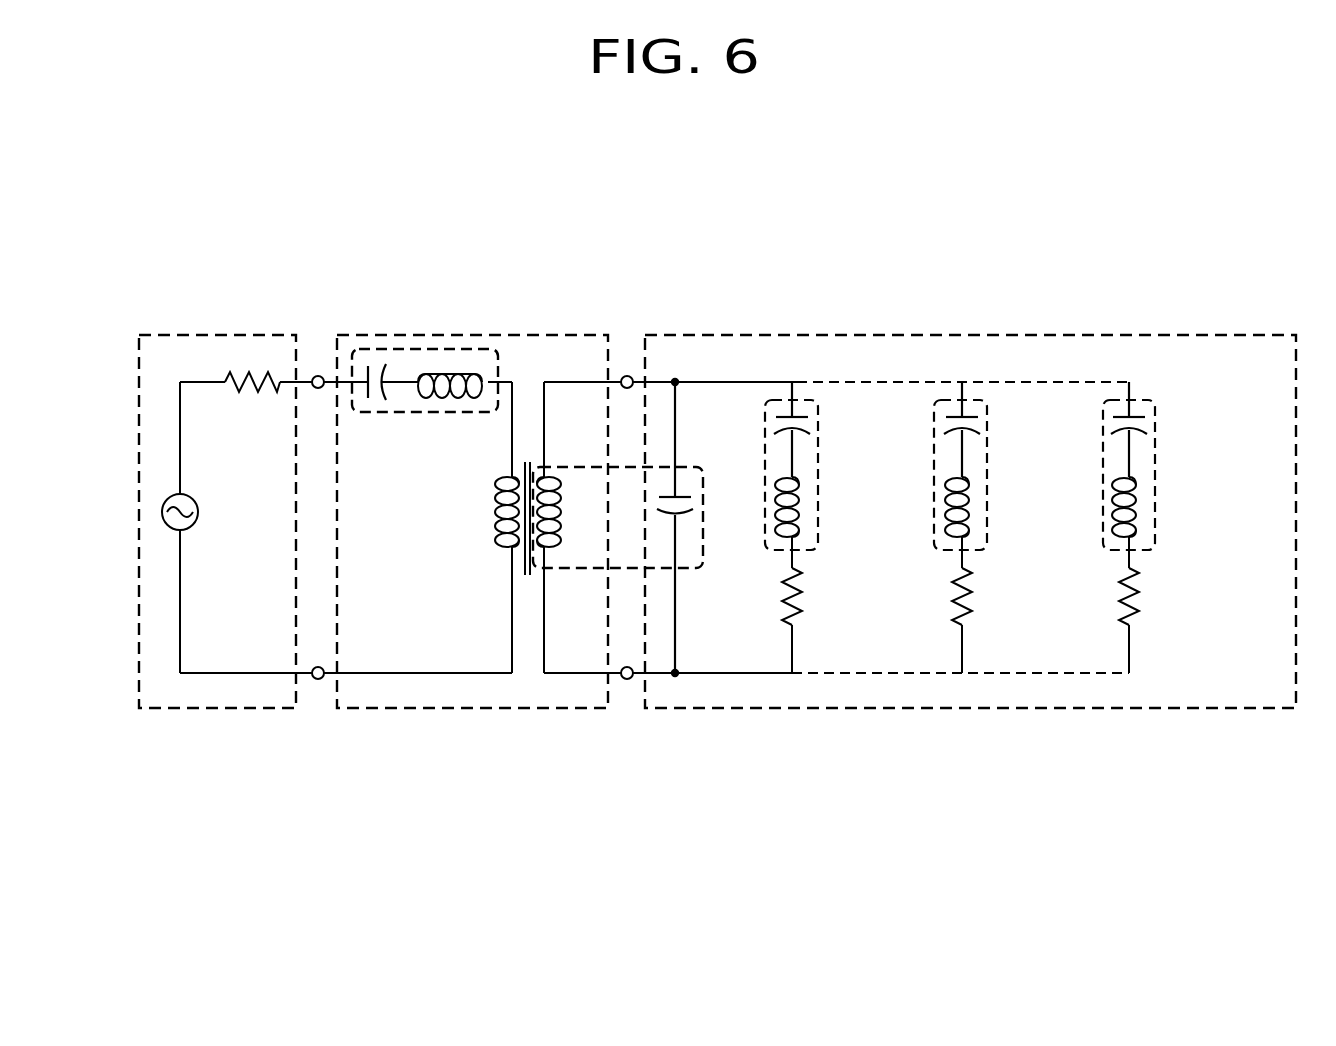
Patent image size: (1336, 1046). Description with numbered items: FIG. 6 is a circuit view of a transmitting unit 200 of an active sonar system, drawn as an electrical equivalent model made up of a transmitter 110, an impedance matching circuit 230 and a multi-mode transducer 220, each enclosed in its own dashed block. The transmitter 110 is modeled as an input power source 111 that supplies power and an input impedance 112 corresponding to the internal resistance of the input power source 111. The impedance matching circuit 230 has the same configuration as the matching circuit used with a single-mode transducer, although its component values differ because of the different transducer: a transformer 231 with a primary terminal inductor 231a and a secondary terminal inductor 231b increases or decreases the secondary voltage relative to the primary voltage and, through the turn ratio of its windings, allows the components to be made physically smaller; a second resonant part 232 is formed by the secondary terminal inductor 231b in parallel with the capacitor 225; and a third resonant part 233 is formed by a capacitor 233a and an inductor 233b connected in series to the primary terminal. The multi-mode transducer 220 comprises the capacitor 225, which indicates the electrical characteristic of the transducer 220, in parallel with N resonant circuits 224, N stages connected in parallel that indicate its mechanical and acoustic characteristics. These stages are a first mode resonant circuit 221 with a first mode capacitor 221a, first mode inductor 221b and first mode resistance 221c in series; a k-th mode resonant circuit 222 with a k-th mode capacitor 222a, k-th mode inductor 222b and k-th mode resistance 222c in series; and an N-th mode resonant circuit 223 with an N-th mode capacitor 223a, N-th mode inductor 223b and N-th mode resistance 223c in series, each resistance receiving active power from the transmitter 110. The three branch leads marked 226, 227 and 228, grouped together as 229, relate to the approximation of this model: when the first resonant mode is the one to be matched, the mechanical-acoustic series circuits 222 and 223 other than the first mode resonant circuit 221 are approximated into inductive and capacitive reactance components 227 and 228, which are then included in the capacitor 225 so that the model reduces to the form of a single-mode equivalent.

The transmitter 110 is at (201, 335).
The input power source 111 is at (209, 514).
The input impedance 112 is at (253, 407).
The transmitting unit 200 is at (616, 272).
The multi-mode transducer 220 is at (694, 335).
The first mode resonant circuit 221 is at (877, 385).
The first mode capacitor 221a is at (827, 429).
The first mode inductor 221b is at (827, 522).
The first mode resistance 221c is at (831, 620).
The k-th mode resonant circuit 222 is at (1044, 385).
The k-th mode capacitor 222a is at (996, 429).
The k-th mode inductor 222b is at (997, 522).
The k-th mode resistance 222c is at (1000, 620).
The N-th mode resonant circuit 223 is at (1215, 385).
The N-th mode capacitor 223a is at (1164, 429).
The N-th mode inductor 223b is at (1164, 522).
The N-th mode resistance 223c is at (1168, 620).
The N resonant circuits 224 is at (1148, 678).
The capacitor 225 is at (707, 527).
The first series resonance circuit 226 is at (808, 400).
The approximated inductive and capacitive reactance component 227 is at (975, 400).
The approximated inductive and capacitive reactance component 228 is at (1115, 400).
The series resonance circuits 229 is at (1097, 260).
The impedance matching circuit 230 is at (512, 335).
The transformer 231 is at (609, 765).
The primary coil LT1 231a is at (497, 548).
The secondary coil LT2 231b is at (552, 548).
The parallel resonance region (LT2 and C0) 232 is at (693, 568).
The series LC circuit 233 is at (392, 349).
The capacitor C3 233a is at (383, 407).
The inductor L3 233b is at (455, 412).